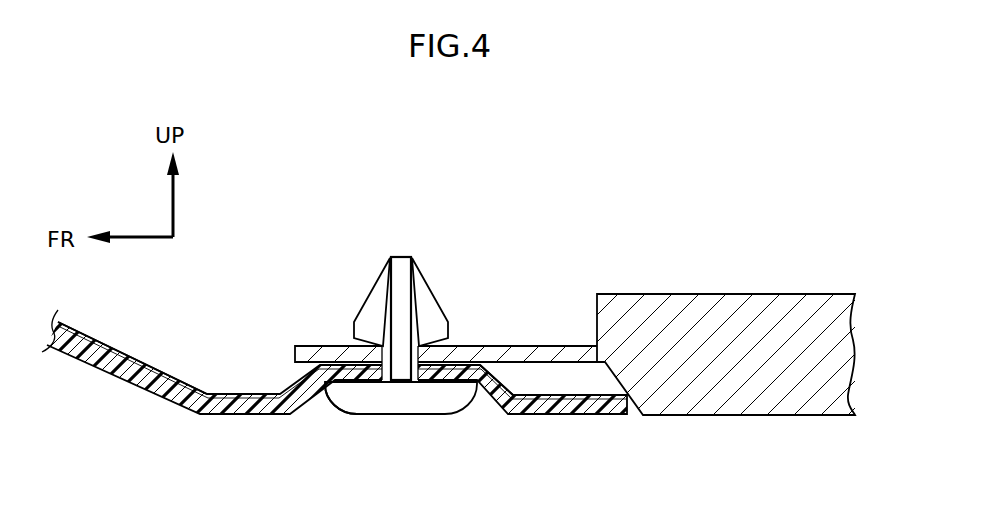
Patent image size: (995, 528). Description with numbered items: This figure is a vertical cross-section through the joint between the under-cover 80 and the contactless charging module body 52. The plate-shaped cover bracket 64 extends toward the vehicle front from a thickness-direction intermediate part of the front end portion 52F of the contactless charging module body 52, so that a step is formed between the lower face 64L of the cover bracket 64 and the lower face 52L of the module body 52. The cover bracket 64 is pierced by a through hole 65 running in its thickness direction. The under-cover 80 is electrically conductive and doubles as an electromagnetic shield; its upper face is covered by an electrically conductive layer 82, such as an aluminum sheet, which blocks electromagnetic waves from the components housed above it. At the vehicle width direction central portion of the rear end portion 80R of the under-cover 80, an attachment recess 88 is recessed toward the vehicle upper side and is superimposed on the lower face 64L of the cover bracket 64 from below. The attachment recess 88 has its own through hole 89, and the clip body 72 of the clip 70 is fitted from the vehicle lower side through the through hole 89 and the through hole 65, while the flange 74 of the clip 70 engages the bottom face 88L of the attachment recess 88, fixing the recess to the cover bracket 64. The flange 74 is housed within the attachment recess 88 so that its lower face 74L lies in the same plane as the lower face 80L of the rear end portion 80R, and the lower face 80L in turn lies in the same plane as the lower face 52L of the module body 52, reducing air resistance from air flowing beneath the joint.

The contactless charging module body 52 is at (808, 291).
The front end portion 52F is at (632, 293).
The lower face 52L is at (758, 416).
The cover bracket 64 is at (523, 345).
The lower face 64L is at (553, 363).
The through hole 65 is at (397, 362).
The clip 70 is at (401, 370).
The clip body 72 is at (424, 276).
The flange 74 is at (442, 400).
The lower face 74L is at (420, 416).
The under-cover 80 is at (195, 425).
The rear end portion 80R is at (525, 416).
The lower face 80L is at (595, 416).
The electrically conductive layer 82 is at (165, 372).
The attachment recess 88 is at (372, 383).
The bottom face 88L is at (352, 383).
The through hole 89 is at (400, 381).